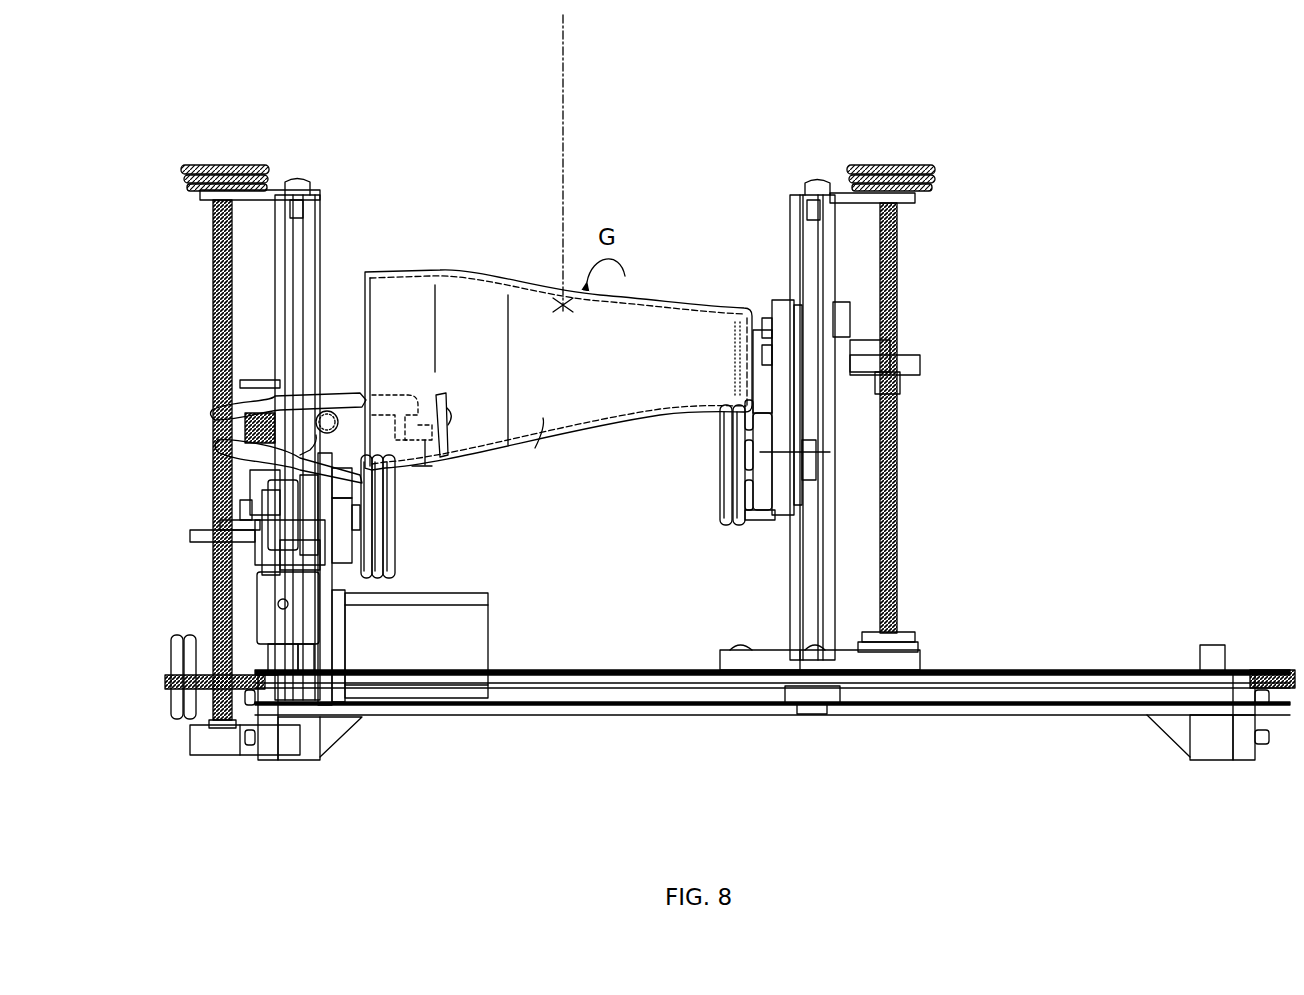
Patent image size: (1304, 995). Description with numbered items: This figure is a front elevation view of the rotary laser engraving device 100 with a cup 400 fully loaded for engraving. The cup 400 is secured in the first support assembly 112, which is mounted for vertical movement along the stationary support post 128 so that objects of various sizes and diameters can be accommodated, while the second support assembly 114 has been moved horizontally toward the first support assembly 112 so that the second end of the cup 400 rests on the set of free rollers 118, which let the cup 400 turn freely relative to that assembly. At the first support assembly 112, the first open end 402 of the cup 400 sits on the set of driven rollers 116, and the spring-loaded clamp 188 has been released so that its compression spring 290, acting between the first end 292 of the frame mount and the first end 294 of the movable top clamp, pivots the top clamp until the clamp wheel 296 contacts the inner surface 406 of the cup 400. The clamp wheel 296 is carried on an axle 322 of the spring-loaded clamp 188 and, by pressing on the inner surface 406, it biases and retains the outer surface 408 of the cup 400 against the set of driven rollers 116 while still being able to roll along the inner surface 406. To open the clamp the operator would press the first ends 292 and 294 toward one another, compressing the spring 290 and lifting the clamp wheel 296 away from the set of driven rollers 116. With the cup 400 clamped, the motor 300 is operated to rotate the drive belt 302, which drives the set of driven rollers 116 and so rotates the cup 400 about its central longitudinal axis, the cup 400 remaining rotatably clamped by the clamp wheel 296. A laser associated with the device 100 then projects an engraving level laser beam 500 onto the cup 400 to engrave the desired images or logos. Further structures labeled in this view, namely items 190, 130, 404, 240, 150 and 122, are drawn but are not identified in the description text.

The rotary laser engraving device 100 is at (330, 66).
The first threaded adjustment rod 190 is at (175, 150).
The stationary support post 128 is at (320, 228).
The first open end 402 is at (368, 268).
The cup 400 is at (440, 270).
The engraving level laser beam 500 is at (565, 110).
The second vertical guide rails 130 is at (790, 226).
The bottle base chuck gear 404 is at (752, 300).
The second threaded adjustment rod 240 is at (940, 158).
The spring-loaded clamp 188 is at (262, 387).
The first end of the movable top clamp 294 is at (215, 413).
The compression spring 290 is at (245, 437).
The first end of the frame mount 292 is at (245, 462).
The first support assembly 112 is at (185, 500).
The clamp wheel 296 is at (446, 400).
The axle 322 is at (428, 452).
The inner surface 406 is at (540, 430).
The outer surface 408 is at (415, 470).
The set of driven rollers 116 is at (398, 553).
The second support assembly 114 is at (700, 490).
The set of free rollers 118 is at (722, 542).
The drive belt 302 is at (278, 665).
The horizontal drive pulley 150 is at (175, 712).
The motor 300 is at (438, 668).
The base rail 122 is at (630, 695).